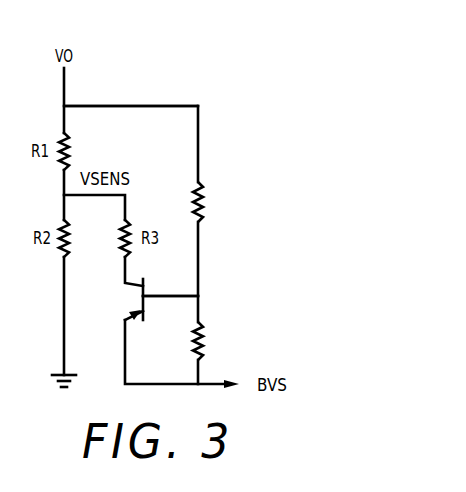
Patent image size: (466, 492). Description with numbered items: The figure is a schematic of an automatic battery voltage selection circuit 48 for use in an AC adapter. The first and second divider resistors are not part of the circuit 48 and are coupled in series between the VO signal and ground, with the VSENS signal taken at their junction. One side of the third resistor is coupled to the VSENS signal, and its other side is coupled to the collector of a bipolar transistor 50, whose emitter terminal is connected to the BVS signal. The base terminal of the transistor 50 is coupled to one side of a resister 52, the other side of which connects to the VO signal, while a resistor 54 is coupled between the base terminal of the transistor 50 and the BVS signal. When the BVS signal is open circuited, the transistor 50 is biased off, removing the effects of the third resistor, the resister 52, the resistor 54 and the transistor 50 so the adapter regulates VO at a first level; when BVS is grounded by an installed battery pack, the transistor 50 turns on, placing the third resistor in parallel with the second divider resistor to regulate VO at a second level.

The automatic battery voltage selection circuit 48 is at (242, 86).
The bipolar transistor 50 is at (131, 285).
The resister 52 is at (207, 200).
The resistor 54 is at (208, 343).